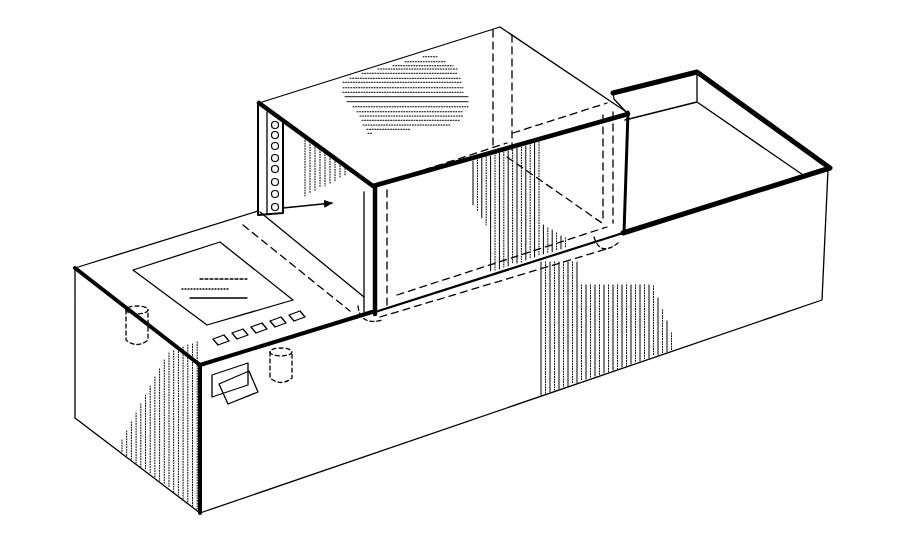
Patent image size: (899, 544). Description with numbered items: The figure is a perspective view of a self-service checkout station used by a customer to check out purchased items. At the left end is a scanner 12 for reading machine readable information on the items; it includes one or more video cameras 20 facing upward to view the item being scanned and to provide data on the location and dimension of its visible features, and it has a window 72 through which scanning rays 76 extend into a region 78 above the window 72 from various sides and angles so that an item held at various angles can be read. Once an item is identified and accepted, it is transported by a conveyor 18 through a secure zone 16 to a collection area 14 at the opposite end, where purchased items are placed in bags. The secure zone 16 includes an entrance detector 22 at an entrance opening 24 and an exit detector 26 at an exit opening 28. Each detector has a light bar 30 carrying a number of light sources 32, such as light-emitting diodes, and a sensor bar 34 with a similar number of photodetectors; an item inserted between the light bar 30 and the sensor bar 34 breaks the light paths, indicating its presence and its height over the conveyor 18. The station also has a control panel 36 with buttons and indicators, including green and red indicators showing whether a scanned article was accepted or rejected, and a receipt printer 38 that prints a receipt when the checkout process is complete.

The scanner 12 is at (185, 248).
The collection area 14 is at (652, 135).
The secure zone 16 is at (343, 66).
The conveyor 18 is at (453, 298).
The video cameras 20 is at (298, 372).
The entrance detector 22 is at (252, 138).
The entrance opening 24 is at (258, 205).
The exit detector 26 is at (485, 57).
The exit opening 28 is at (585, 64).
The light bar 30 is at (258, 183).
The light sources 32 is at (283, 146).
The sensor bar 34 is at (363, 260).
The control panel 36 is at (364, 320).
The receipt printer 38 is at (220, 401).
The window 72 is at (160, 272).
The scanning rays 76 is at (337, 427).
The region 78 is at (142, 108).